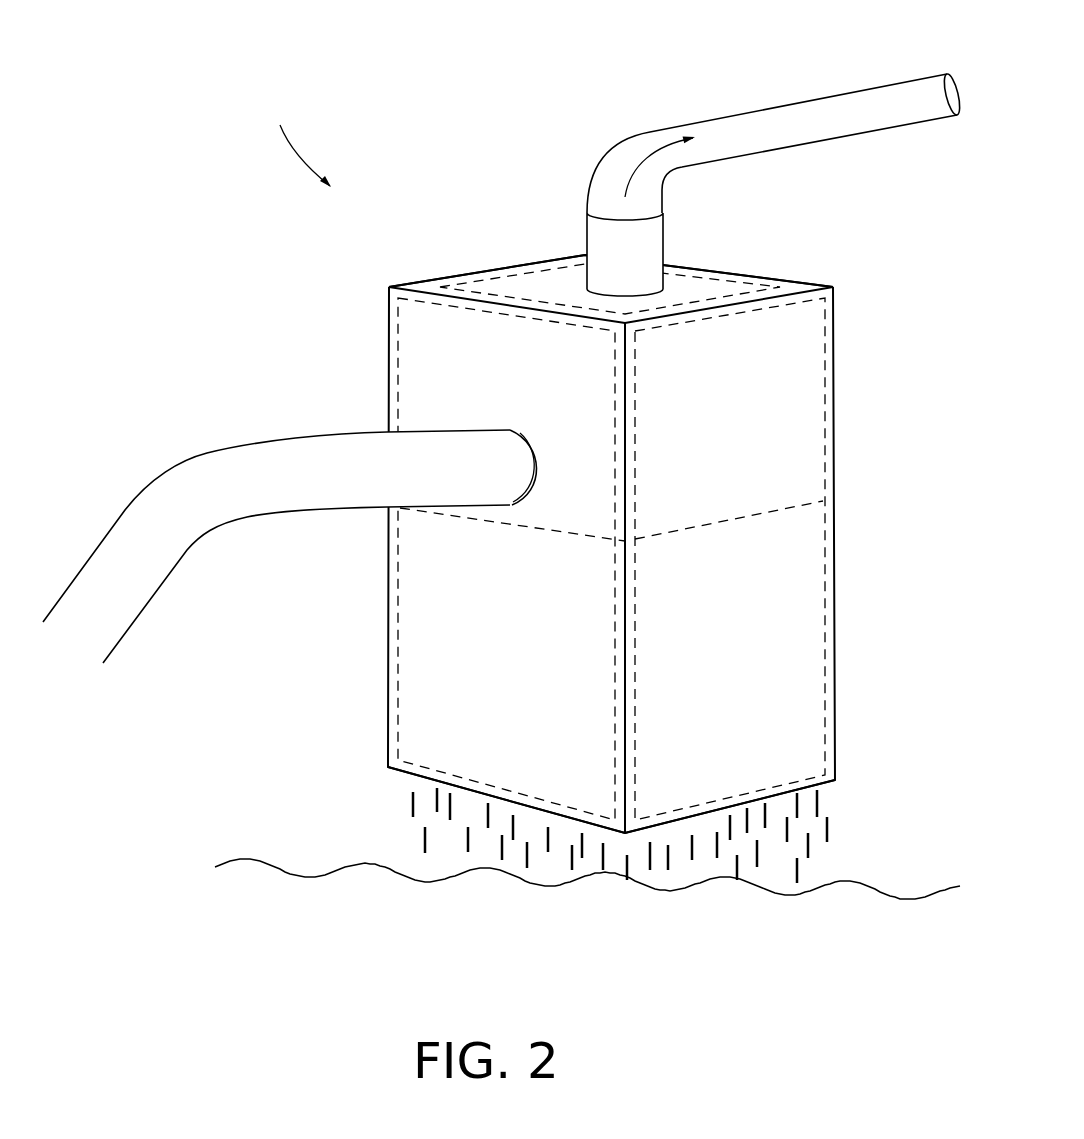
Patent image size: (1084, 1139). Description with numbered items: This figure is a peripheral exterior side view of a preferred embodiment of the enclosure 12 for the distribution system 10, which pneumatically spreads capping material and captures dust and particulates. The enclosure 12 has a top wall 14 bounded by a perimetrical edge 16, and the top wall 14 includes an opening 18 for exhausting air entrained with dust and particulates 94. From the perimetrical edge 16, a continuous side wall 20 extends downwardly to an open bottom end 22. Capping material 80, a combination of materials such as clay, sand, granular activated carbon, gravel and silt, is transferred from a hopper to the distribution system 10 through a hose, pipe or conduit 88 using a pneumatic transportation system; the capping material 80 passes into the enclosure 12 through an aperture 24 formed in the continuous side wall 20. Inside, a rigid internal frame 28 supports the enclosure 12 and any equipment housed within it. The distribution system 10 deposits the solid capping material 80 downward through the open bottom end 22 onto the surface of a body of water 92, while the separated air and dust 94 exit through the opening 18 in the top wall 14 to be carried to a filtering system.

The distribution system 10 is at (294, 141).
The enclosure 12 is at (837, 365).
The top wall 14 is at (698, 288).
The perimetrical edge 16 is at (450, 282).
The opening 18 is at (587, 289).
The continuous side wall 20 is at (733, 650).
The open bottom end 22 is at (825, 785).
The aperture 24 is at (512, 508).
The rigid internal frame 28 is at (763, 512).
The capping material 80 is at (502, 842).
The hose, pipe or conduit 88 is at (290, 514).
The body of water 92 is at (783, 893).
The air and dust 94 is at (760, 127).